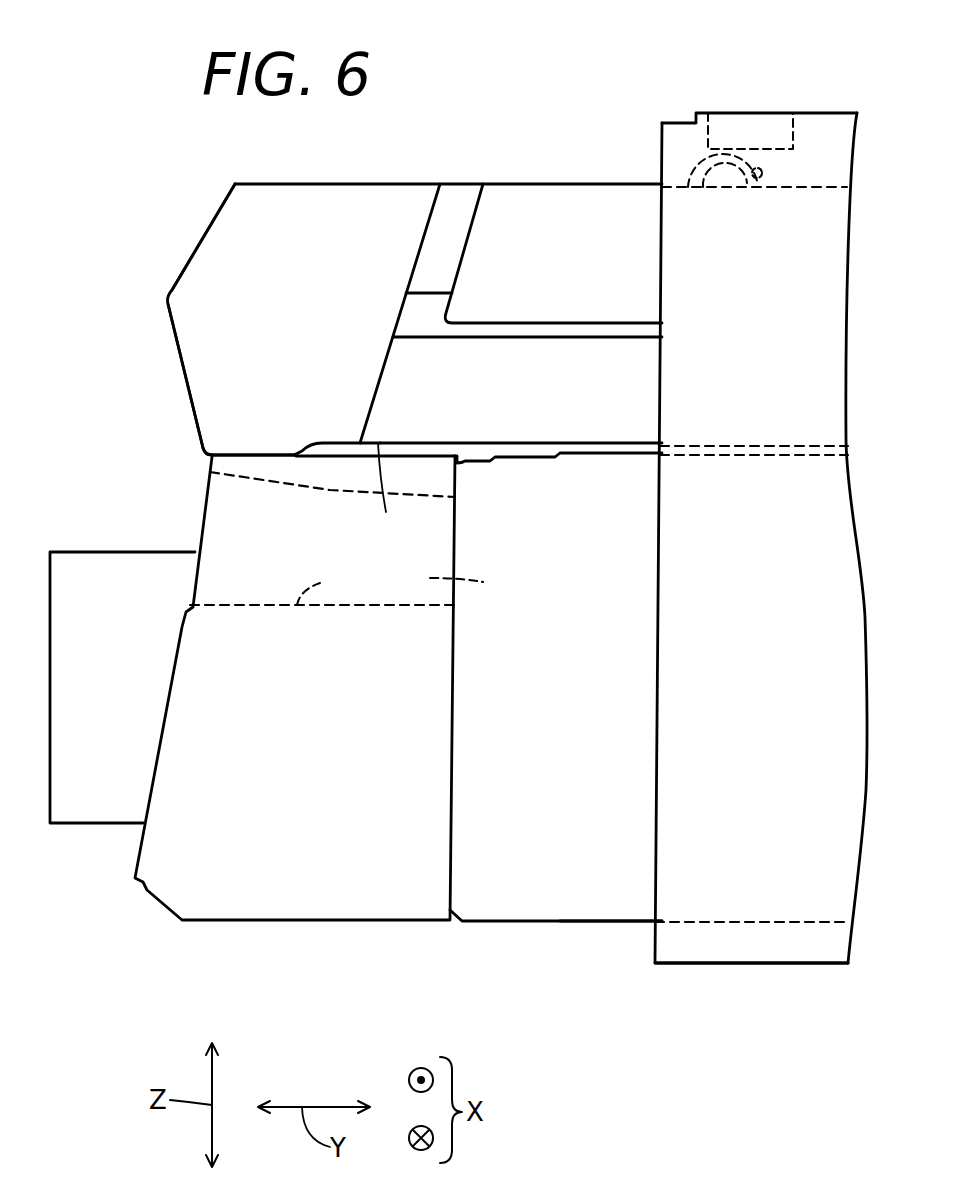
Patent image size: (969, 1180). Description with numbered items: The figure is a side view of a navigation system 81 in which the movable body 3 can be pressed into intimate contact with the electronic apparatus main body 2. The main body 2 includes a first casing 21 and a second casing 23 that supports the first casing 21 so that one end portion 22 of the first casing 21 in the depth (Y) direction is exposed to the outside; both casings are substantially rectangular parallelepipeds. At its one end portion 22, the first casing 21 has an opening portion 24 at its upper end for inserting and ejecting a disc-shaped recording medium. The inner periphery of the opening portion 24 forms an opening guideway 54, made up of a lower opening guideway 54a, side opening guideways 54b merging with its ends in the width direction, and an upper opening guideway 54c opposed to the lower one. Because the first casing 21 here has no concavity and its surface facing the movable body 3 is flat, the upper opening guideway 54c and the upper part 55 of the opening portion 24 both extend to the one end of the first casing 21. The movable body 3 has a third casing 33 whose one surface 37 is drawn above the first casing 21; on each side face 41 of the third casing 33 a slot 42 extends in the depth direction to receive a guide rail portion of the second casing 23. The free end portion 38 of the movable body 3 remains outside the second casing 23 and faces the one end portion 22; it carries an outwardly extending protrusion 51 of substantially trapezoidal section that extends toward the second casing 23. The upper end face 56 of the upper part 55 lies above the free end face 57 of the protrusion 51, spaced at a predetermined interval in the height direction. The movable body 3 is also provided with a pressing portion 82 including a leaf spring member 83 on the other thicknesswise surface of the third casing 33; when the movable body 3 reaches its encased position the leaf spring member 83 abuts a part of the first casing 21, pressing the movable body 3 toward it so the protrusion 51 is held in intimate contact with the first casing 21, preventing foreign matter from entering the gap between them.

The electronic apparatus main body 2 is at (325, 907).
The movable body 3 is at (322, 195).
The first casing 21 is at (507, 910).
The one end portion 22 is at (600, 905).
The second casing 23 is at (735, 942).
The opening portion 24 is at (222, 538).
The third casing 33 is at (207, 270).
The one surface 37 is at (387, 495).
The free end portion 38 is at (387, 195).
The side face 41 is at (413, 313).
The slot 42 is at (515, 330).
The protrusion 51 is at (213, 430).
The opening guideway 54 is at (253, 590).
The lower opening guideway 54a is at (336, 587).
The side opening guideway 54b is at (488, 580).
The upper opening guideway 54c is at (413, 498).
The upper part 55 is at (440, 482).
The upper end face 56 is at (338, 453).
The free end face 57 is at (252, 455).
The navigation system 81 is at (492, 103).
The pressing portion 82 is at (685, 98).
The leaf spring member 83 is at (762, 170).